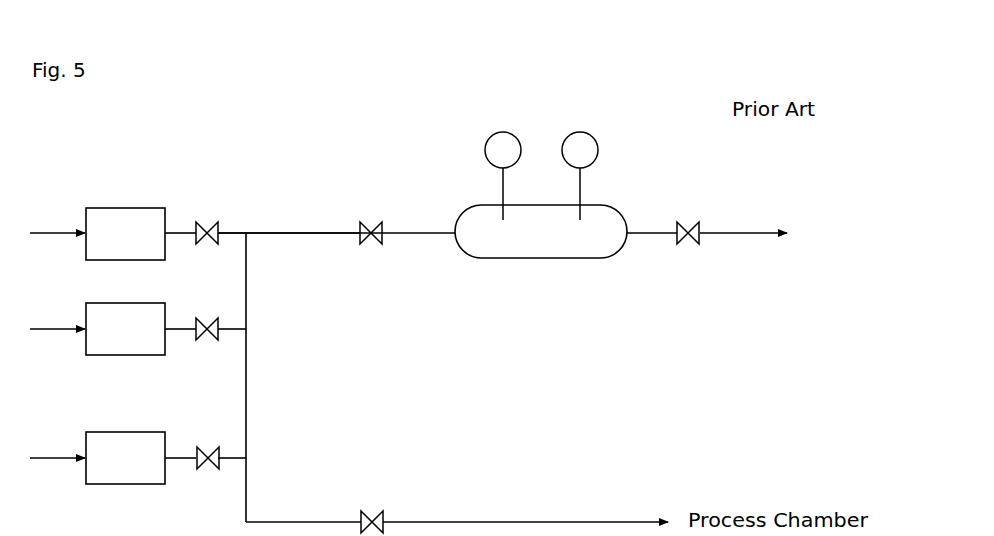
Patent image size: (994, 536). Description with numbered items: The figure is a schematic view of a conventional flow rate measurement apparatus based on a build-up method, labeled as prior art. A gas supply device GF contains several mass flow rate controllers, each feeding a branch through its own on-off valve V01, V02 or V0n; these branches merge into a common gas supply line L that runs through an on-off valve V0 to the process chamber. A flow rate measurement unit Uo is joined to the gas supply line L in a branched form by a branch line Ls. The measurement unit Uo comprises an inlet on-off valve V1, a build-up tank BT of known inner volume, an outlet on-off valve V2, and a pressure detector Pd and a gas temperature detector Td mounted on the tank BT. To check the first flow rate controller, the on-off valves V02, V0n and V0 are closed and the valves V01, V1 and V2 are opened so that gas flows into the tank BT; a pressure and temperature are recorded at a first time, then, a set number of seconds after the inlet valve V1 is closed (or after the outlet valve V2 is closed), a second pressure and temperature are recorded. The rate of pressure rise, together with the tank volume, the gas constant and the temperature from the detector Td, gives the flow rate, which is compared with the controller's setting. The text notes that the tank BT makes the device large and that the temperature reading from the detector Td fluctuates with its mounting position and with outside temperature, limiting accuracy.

The gas supply device GF is at (112, 183).
The on-off valve V01 is at (203, 222).
The on-off valve V02 is at (203, 318).
The on-off valve V0n is at (203, 447).
The supply line to buffer tank Ls is at (288, 230).
The gas supply line L is at (246, 490).
The inlet on-off valve V1 is at (368, 223).
The outlet on-off valve V2 is at (688, 222).
The on-off valve V0 is at (370, 512).
The build-up tank BT is at (583, 262).
The flow rate measurement unit Uo is at (537, 274).
The gas temperature detector Td is at (503, 176).
The pressure detector Pd is at (580, 176).